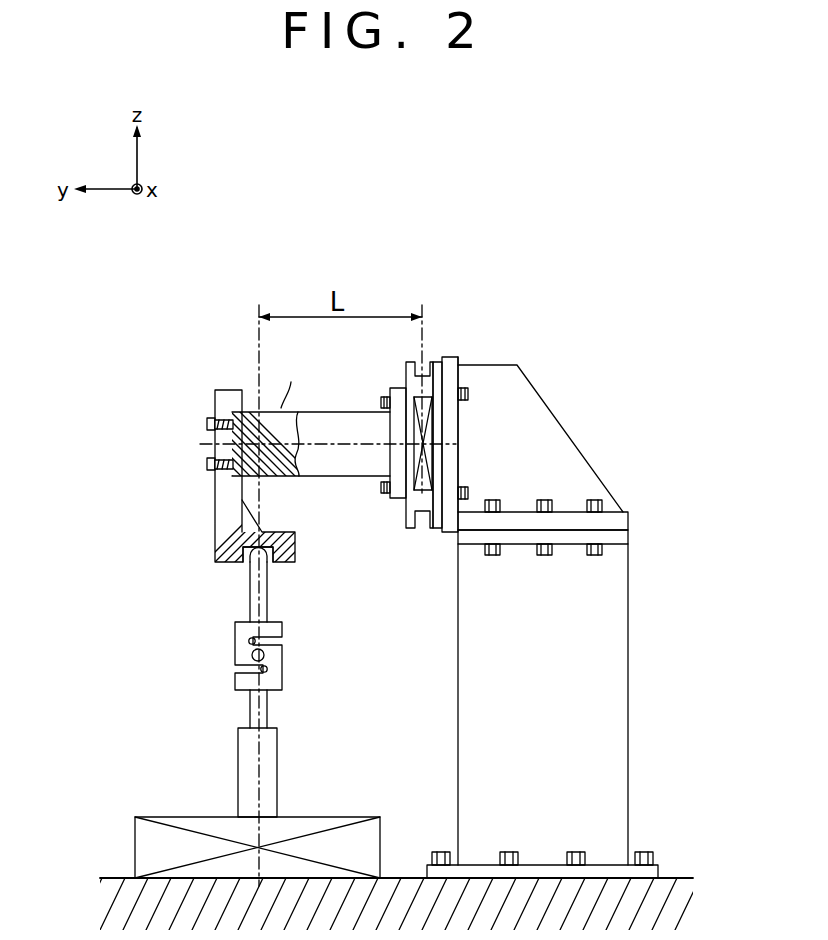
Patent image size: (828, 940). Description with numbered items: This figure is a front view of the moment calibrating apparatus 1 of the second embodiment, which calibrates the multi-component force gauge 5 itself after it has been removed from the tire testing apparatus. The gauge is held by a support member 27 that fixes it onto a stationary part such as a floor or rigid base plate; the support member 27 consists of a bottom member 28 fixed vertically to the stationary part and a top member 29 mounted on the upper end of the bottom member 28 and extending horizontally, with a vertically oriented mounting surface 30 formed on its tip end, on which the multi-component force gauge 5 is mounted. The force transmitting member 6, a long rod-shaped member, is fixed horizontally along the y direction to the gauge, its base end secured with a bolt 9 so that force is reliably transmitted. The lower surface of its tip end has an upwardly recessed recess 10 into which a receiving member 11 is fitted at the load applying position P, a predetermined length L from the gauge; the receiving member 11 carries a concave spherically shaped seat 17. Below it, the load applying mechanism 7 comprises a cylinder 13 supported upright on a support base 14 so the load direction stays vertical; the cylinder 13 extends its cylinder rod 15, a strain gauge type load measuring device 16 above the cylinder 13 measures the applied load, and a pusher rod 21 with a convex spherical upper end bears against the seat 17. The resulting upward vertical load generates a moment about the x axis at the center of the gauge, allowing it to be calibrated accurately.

The moment calibrating apparatus 1 is at (576, 325).
The multi-component force gauge 5 is at (405, 380).
The force transmitting member 6 is at (322, 471).
The load applying mechanism 7 is at (115, 569).
The bolt 9 is at (384, 496).
The recess 10 is at (232, 553).
The receiving member 11 is at (292, 556).
The cylinder 13 is at (273, 766).
The support base 14 is at (142, 855).
The cylinder rod 15 is at (267, 708).
The load measuring device 16 is at (242, 651).
The spherically shaped seat 17 is at (250, 568).
The pusher rod 21 is at (267, 603).
The support member 27 is at (585, 617).
The bottom member 28 is at (698, 502).
The top member 29 is at (606, 497).
The mounting surface 30 is at (439, 385).